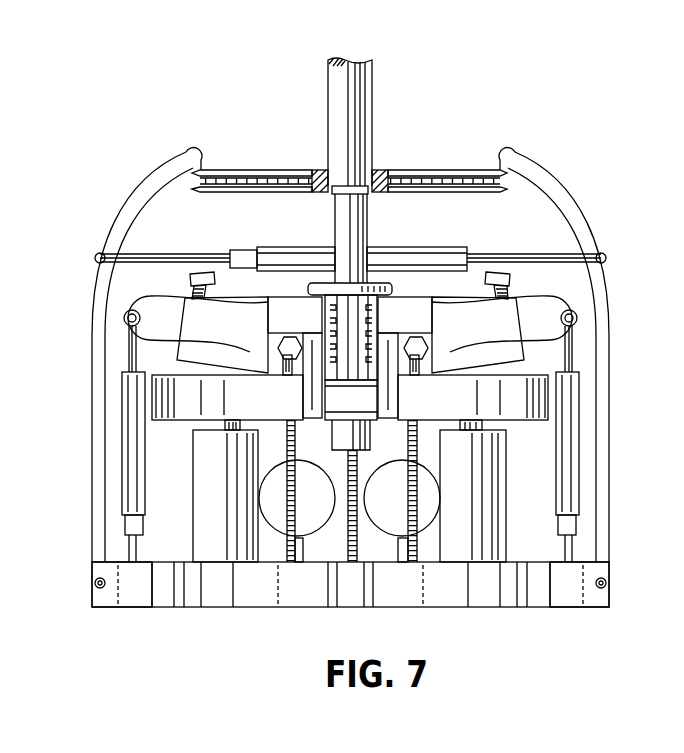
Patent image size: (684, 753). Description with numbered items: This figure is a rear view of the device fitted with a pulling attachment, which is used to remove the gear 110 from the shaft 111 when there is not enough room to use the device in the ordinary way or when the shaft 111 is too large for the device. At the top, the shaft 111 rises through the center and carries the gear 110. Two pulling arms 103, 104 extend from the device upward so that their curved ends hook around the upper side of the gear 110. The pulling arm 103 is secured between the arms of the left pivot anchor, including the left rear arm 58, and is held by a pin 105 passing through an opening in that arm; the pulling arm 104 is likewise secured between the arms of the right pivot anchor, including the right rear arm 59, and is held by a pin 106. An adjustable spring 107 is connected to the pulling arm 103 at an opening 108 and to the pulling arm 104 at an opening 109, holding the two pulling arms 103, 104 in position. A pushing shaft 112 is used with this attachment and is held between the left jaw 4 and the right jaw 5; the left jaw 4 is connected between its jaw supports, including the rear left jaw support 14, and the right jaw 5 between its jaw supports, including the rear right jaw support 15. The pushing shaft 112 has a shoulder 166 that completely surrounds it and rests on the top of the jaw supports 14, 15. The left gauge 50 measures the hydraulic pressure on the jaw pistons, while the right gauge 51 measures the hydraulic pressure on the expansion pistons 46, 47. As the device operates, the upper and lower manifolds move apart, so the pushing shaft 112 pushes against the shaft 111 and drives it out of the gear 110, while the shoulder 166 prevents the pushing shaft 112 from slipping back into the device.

The left jaw 4 is at (457, 279).
The right jaw 5 is at (253, 298).
The rear left jaw support 14 is at (396, 296).
The rear right jaw support 15 is at (285, 297).
The expansion piston 46 is at (506, 514).
The expansion piston 47 is at (193, 512).
The left gauge 50 is at (399, 459).
The right gauge 51 is at (304, 537).
The left rear arm 58 is at (609, 566).
The right rear arm 59 is at (92, 564).
The pulling arm 103 is at (575, 196).
The pulling arm 104 is at (126, 196).
The pin 105 is at (604, 586).
The pin 106 is at (97, 586).
The adjustable spring 107 is at (297, 247).
The opening 108 is at (606, 257).
The opening 109 is at (96, 257).
The gear 110 is at (428, 169).
The shaft 111 is at (372, 108).
The pushing shaft 112 is at (368, 233).
The shoulder 166 is at (380, 282).